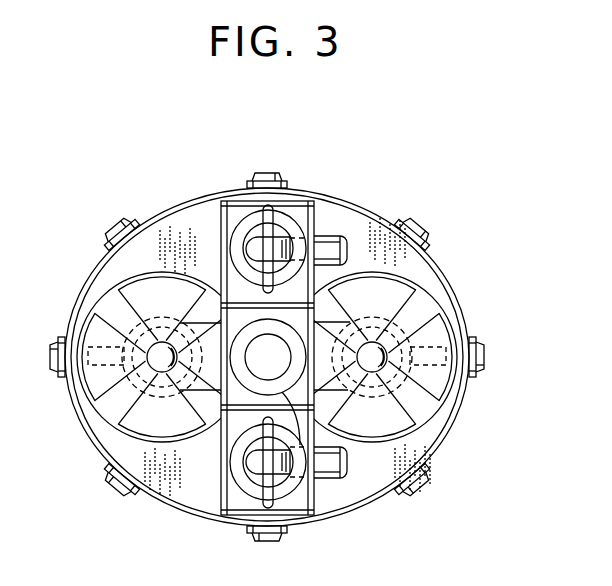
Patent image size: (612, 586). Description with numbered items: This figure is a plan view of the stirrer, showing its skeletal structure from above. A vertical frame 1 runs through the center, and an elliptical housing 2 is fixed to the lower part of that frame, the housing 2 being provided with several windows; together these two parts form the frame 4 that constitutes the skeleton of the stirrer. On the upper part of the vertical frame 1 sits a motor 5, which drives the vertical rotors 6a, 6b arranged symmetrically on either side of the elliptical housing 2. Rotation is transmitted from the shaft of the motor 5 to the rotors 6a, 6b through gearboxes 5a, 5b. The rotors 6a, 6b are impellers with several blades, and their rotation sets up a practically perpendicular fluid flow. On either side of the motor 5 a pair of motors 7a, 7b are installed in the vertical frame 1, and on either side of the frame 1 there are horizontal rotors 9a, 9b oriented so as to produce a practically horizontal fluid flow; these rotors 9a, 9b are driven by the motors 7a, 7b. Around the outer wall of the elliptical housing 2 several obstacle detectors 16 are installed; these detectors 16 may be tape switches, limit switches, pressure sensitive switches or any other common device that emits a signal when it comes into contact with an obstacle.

The vertical frame 1 is at (246, 413).
The elliptical housing 2 is at (458, 306).
The frame 4 is at (447, 275).
The motor 5 is at (319, 477).
The gearbox 5a is at (196, 405).
The gearbox 5b is at (345, 400).
The vertical rotor 6a is at (96, 384).
The vertical rotor 6b is at (438, 383).
The motor 7a is at (292, 233).
The motor 7b is at (291, 490).
The horizontal rotor 9a is at (269, 207).
The horizontal rotor 9b is at (266, 500).
The obstacle detector 16 is at (115, 215).